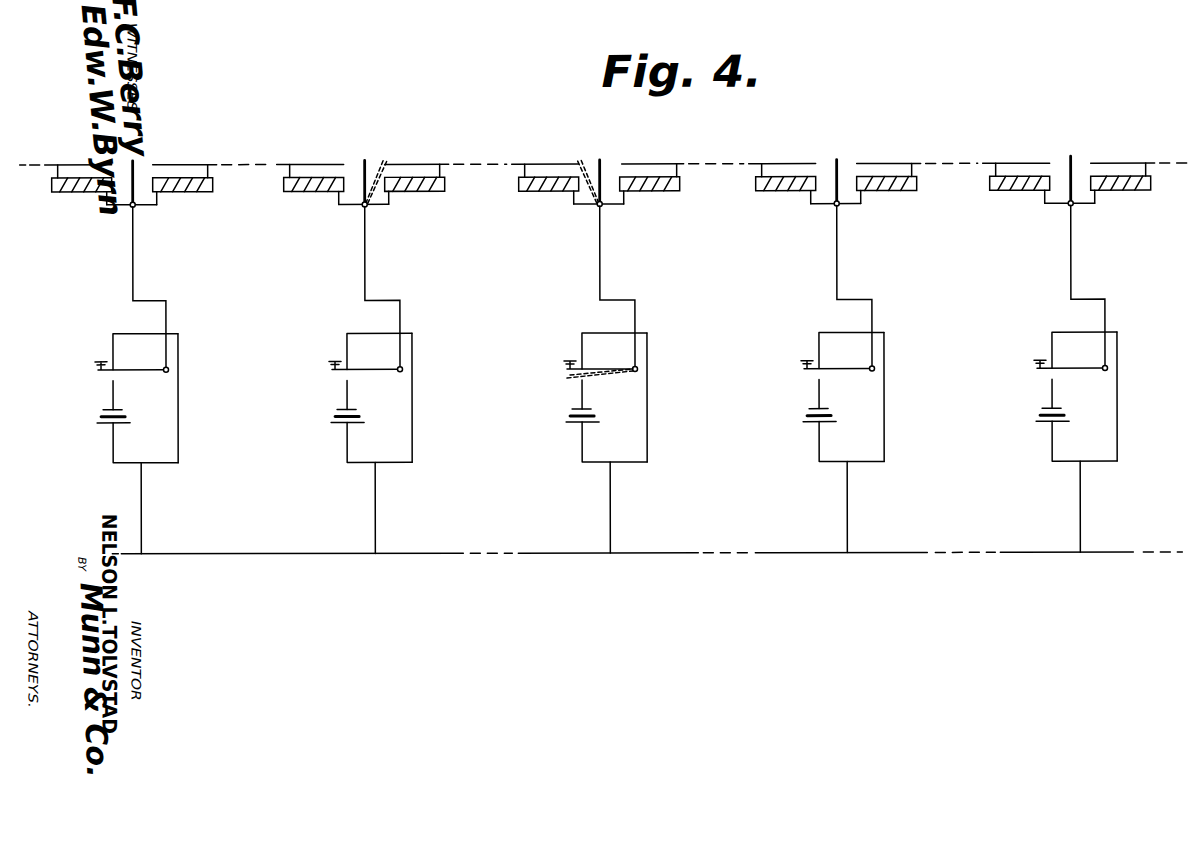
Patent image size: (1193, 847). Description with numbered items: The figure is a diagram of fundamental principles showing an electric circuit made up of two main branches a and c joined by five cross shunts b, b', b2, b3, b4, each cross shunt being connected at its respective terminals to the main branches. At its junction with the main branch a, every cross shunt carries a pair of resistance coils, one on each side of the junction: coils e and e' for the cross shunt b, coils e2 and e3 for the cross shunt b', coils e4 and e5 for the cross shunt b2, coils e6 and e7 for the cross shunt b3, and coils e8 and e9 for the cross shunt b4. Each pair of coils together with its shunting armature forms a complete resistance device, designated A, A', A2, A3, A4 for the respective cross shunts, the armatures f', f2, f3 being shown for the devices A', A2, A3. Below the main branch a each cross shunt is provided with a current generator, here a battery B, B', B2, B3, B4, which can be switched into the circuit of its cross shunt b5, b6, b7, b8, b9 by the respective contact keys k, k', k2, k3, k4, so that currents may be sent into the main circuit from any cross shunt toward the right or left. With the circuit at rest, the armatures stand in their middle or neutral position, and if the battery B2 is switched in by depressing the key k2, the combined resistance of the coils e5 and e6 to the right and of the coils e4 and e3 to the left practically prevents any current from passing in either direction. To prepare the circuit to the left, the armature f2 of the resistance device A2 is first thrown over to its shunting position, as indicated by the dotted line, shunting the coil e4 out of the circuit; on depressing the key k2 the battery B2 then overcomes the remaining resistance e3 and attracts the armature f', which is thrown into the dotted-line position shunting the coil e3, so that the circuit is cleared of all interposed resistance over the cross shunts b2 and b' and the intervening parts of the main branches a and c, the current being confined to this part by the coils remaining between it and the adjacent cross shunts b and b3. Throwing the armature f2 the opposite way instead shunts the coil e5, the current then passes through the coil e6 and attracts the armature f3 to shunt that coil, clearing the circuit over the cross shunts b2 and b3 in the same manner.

The main branch a is at (604, 150).
The main branch c is at (647, 540).
The resistance coil e is at (82, 192).
The resistance coil e' is at (183, 191).
The resistance coil e2 is at (314, 192).
The resistance coil e3 is at (415, 190).
The resistance coil e4 is at (549, 191).
The resistance coil e5 is at (655, 190).
The resistance coil e6 is at (786, 191).
The resistance coil e7 is at (887, 188).
The resistance coil e8 is at (1020, 189).
The resistance coil e9 is at (1122, 189).
The resistance device A is at (135, 195).
The resistance device A' is at (369, 217).
The resistance device A2 is at (606, 217).
The resistance device A3 is at (842, 216).
The resistance device A4 is at (1075, 193).
The shunting armature f' is at (376, 167).
The shunting armature f2 is at (597, 166).
The shunting armature f3 is at (841, 165).
The cross shunt b is at (150, 380).
The cross shunt b' is at (387, 379).
The cross shunt b2 is at (624, 379).
The cross shunt b3 is at (861, 378).
The cross shunt b4 is at (1093, 378).
The cross shunt b5 is at (139, 414).
The cross shunt b6 is at (372, 412).
The cross shunt b7 is at (607, 412).
The cross shunt b8 is at (842, 411).
The cross shunt b9 is at (1074, 411).
The contact key k is at (122, 355).
The contact key k' is at (355, 354).
The contact key k2 is at (592, 356).
The contact key k3 is at (830, 353).
The contact key k4 is at (1062, 352).
The current generator B is at (103, 430).
The current generator B' is at (337, 429).
The current generator B2 is at (573, 428).
The current generator B3 is at (811, 427).
The current generator B4 is at (1040, 426).